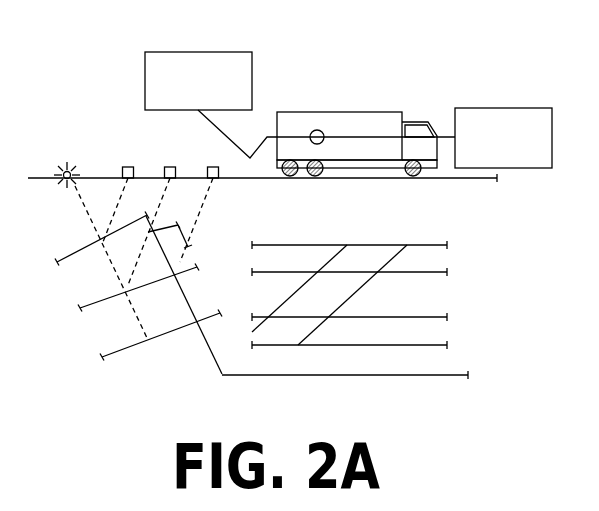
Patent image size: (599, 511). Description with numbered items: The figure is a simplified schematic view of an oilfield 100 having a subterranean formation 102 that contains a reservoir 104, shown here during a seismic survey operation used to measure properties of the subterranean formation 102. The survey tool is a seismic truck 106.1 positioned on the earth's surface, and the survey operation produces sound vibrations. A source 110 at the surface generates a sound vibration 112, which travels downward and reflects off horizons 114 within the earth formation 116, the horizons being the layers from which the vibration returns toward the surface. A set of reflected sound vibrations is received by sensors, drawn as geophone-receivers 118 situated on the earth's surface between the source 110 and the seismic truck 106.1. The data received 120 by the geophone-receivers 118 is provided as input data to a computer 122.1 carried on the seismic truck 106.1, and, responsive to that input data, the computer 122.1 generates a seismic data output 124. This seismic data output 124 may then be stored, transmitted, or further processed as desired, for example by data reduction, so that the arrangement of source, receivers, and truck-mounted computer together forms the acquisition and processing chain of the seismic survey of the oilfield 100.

The oilfield 100 is at (463, 78).
The subterranean formation 102 is at (368, 270).
The reservoir 104 is at (422, 306).
The seismic truck 106.1 is at (383, 112).
The source 110 is at (60, 168).
The sound vibration 112 is at (110, 203).
The horizons 114 is at (56, 262).
The earth formation 116 is at (208, 346).
The geophone-receivers 118 is at (208, 167).
The data received 120 is at (175, 52).
The computer 122.1 is at (317, 130).
The seismic data output 124 is at (520, 108).